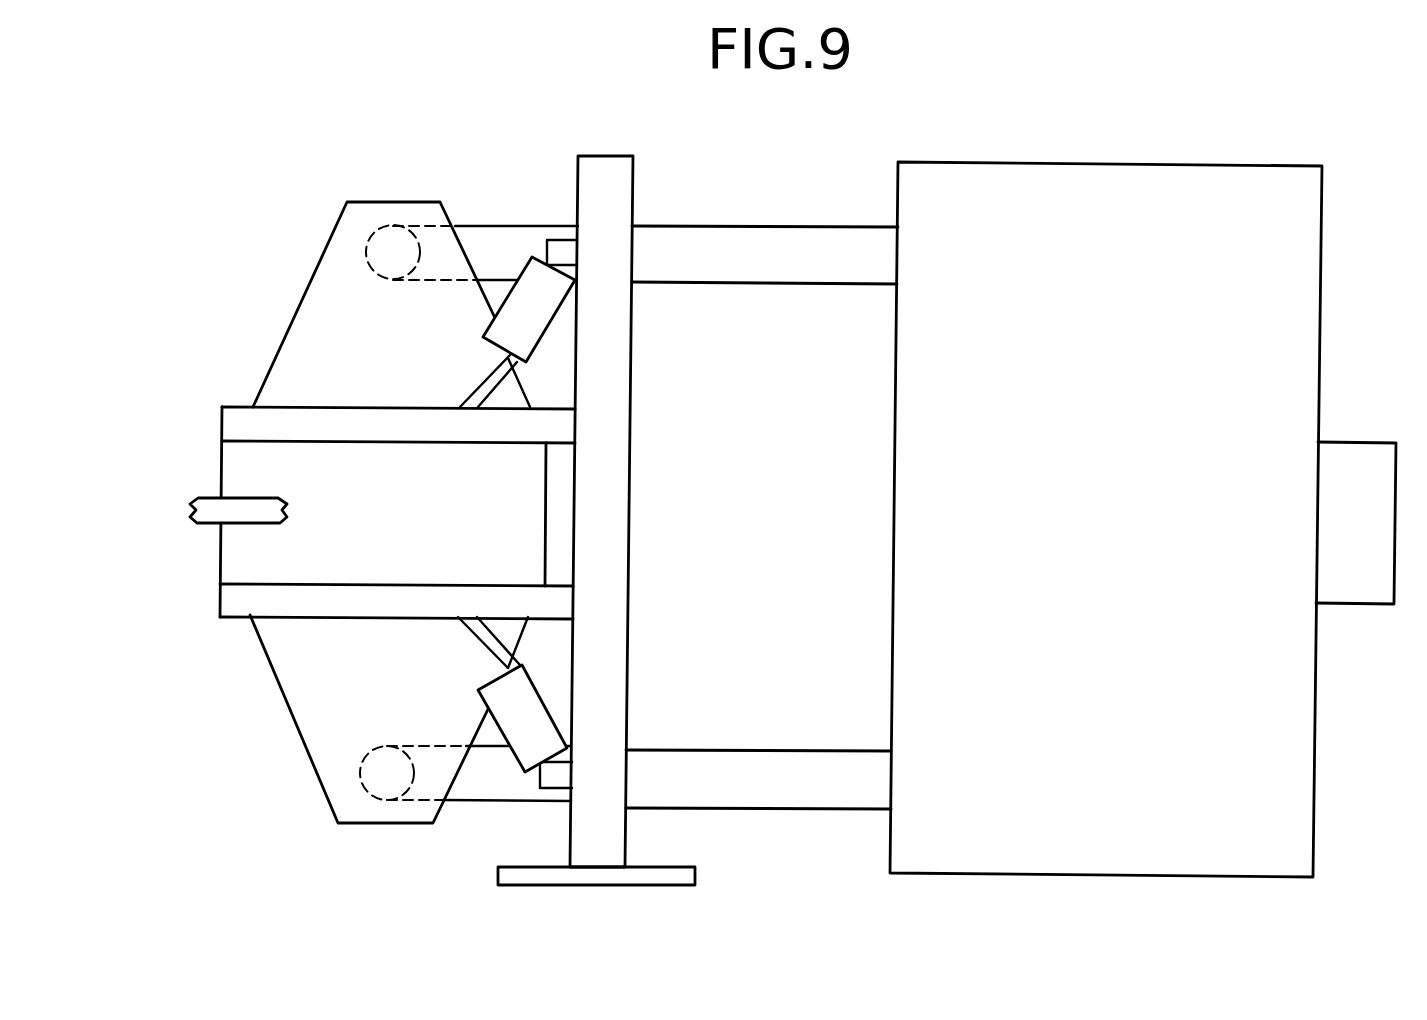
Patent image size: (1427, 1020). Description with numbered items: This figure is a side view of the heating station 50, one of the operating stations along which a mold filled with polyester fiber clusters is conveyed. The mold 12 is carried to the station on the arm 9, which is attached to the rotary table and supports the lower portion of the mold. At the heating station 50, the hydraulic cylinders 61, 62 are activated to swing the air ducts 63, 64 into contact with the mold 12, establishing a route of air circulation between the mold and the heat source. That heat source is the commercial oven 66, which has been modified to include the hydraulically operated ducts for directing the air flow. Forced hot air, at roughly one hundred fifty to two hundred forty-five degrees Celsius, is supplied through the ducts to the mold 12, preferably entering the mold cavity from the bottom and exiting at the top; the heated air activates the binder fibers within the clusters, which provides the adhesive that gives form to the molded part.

The heating station 50 is at (225, 210).
The commercial oven 66 is at (1288, 243).
The mold 12 is at (221, 465).
The arm 9 is at (193, 532).
The air duct 64 is at (482, 247).
The hydraulic cylinder 62 is at (520, 298).
The air duct 63 is at (418, 802).
The hydraulic cylinder 61 is at (522, 748).